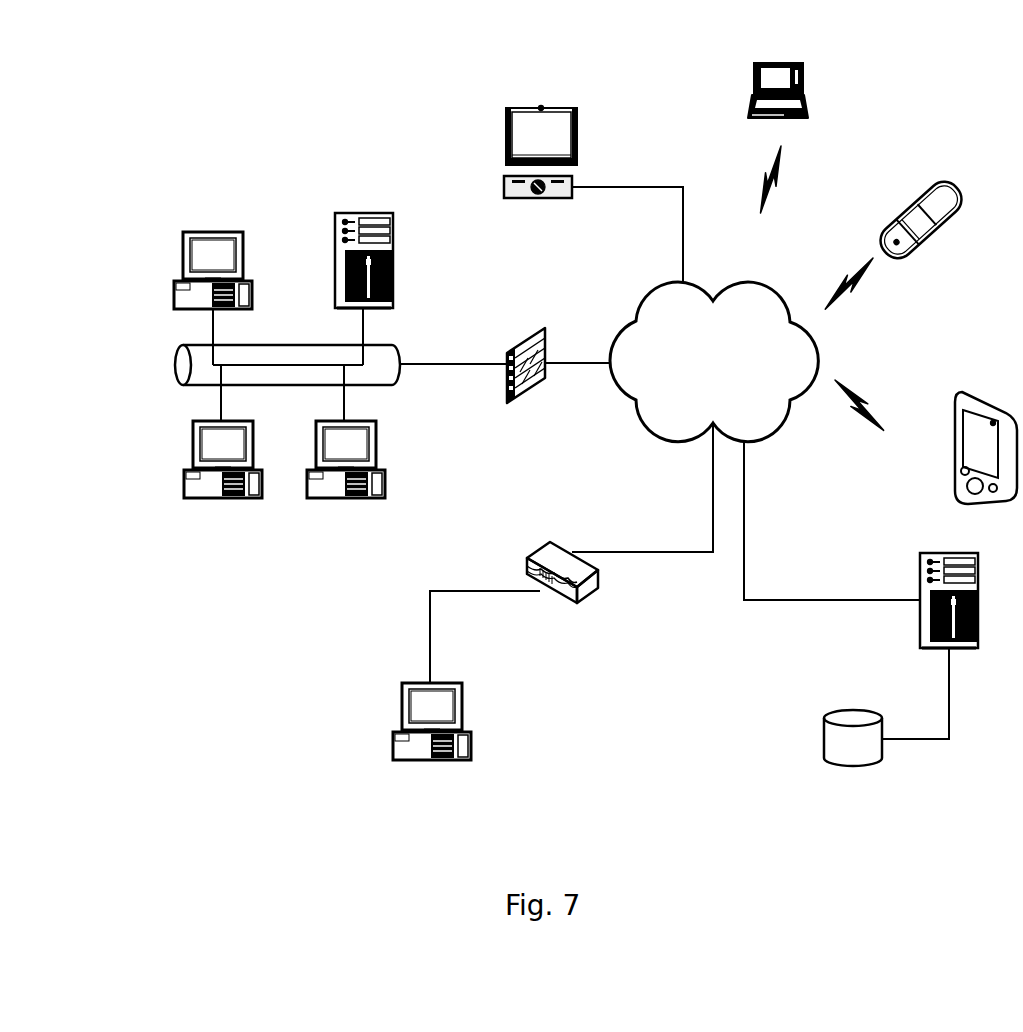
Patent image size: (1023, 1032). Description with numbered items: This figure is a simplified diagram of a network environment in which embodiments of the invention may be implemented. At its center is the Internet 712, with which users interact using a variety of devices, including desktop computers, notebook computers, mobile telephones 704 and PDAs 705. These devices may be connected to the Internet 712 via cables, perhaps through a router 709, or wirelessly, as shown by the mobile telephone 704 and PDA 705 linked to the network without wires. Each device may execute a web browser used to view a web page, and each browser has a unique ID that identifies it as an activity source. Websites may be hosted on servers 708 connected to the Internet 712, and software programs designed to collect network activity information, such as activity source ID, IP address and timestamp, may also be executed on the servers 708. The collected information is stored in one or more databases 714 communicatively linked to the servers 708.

The mobile telephone 704 is at (901, 205).
The PDA 705 is at (954, 421).
The server 708 is at (908, 581).
The router 709 is at (515, 559).
The Internet 712 is at (690, 351).
The database 714 is at (821, 719).